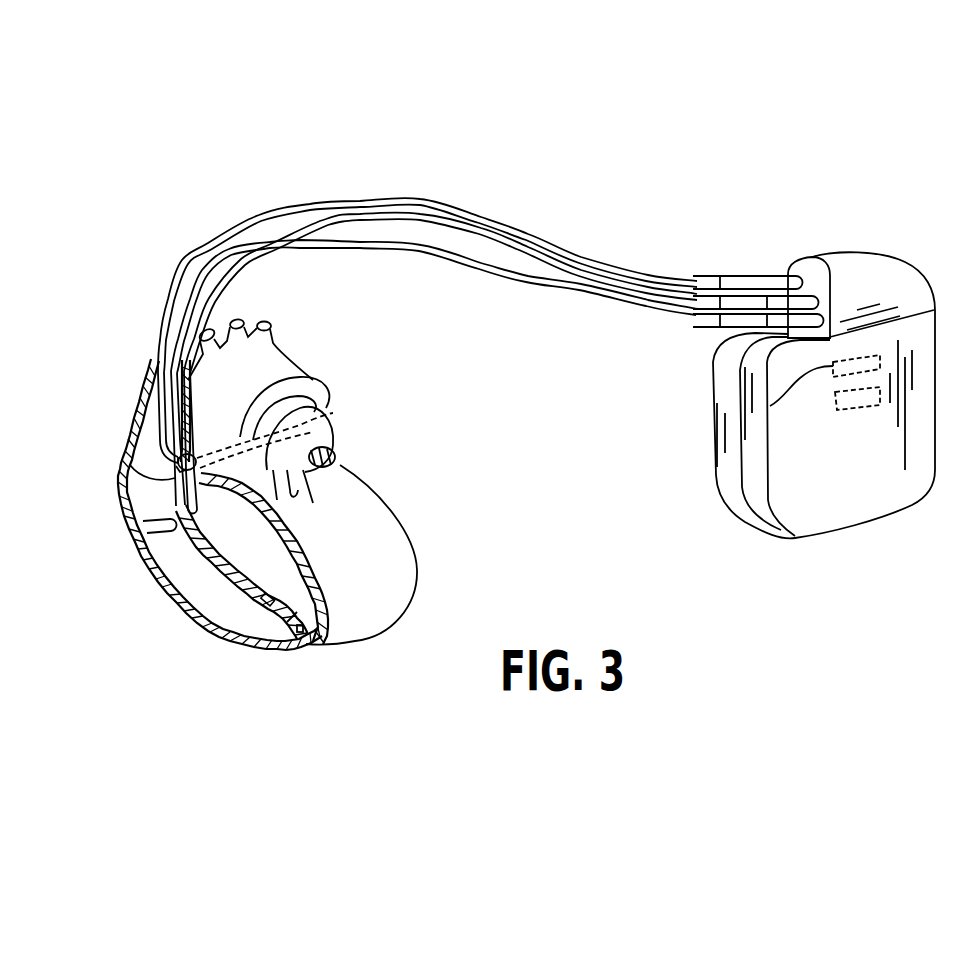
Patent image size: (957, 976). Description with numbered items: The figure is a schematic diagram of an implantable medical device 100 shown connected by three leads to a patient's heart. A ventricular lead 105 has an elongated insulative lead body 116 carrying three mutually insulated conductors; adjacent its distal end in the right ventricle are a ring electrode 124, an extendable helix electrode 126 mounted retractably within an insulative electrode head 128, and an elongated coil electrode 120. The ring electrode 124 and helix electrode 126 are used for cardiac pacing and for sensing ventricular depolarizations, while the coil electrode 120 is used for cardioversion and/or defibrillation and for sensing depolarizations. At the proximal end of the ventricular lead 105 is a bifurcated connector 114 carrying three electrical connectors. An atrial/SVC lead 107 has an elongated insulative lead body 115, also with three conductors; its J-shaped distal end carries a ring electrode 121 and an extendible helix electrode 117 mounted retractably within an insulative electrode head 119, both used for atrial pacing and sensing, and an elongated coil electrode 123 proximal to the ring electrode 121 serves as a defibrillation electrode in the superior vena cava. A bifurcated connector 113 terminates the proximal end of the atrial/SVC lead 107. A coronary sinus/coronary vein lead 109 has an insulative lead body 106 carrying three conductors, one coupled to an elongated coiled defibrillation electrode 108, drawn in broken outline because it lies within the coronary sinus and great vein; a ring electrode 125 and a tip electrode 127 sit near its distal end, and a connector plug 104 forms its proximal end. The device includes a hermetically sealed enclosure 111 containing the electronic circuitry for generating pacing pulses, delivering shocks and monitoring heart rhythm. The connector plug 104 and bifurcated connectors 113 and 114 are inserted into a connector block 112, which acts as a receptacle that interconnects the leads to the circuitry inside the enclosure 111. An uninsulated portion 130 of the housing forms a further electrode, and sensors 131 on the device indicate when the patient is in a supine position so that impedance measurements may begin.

The implantable medical device 100 is at (530, 176).
The connector plug 104 is at (740, 278).
The ventricular lead 105 is at (660, 318).
The lead body 106 is at (658, 284).
The atrial/SVC lead 107 is at (621, 294).
The elongated coiled defibrillation electrode 108 is at (333, 413).
The coronary sinus/coronary vein lead 109 is at (612, 275).
The hermetically sealed enclosure 111 is at (807, 497).
The connector block 112 is at (860, 270).
The bifurcated connector 113 is at (796, 276).
The bifurcated connector 114 is at (707, 328).
The lead body 115 is at (588, 272).
The lead body 116 is at (574, 292).
The extendible helix electrode 117 is at (197, 452).
The insulative electrode head 119 is at (185, 452).
The elongated coil electrode 120 is at (268, 610).
The ring electrode 121 is at (180, 467).
The elongated coil electrode 123 is at (152, 410).
The ring electrode 124 is at (273, 607).
The ring electrode 125 is at (343, 463).
The extendable helix electrode 126 is at (300, 633).
The tip electrode 127 is at (313, 480).
The insulative electrode head 128 is at (297, 622).
The uninsulated portion of the housing 130 is at (770, 406).
The sensors 131 is at (838, 413).